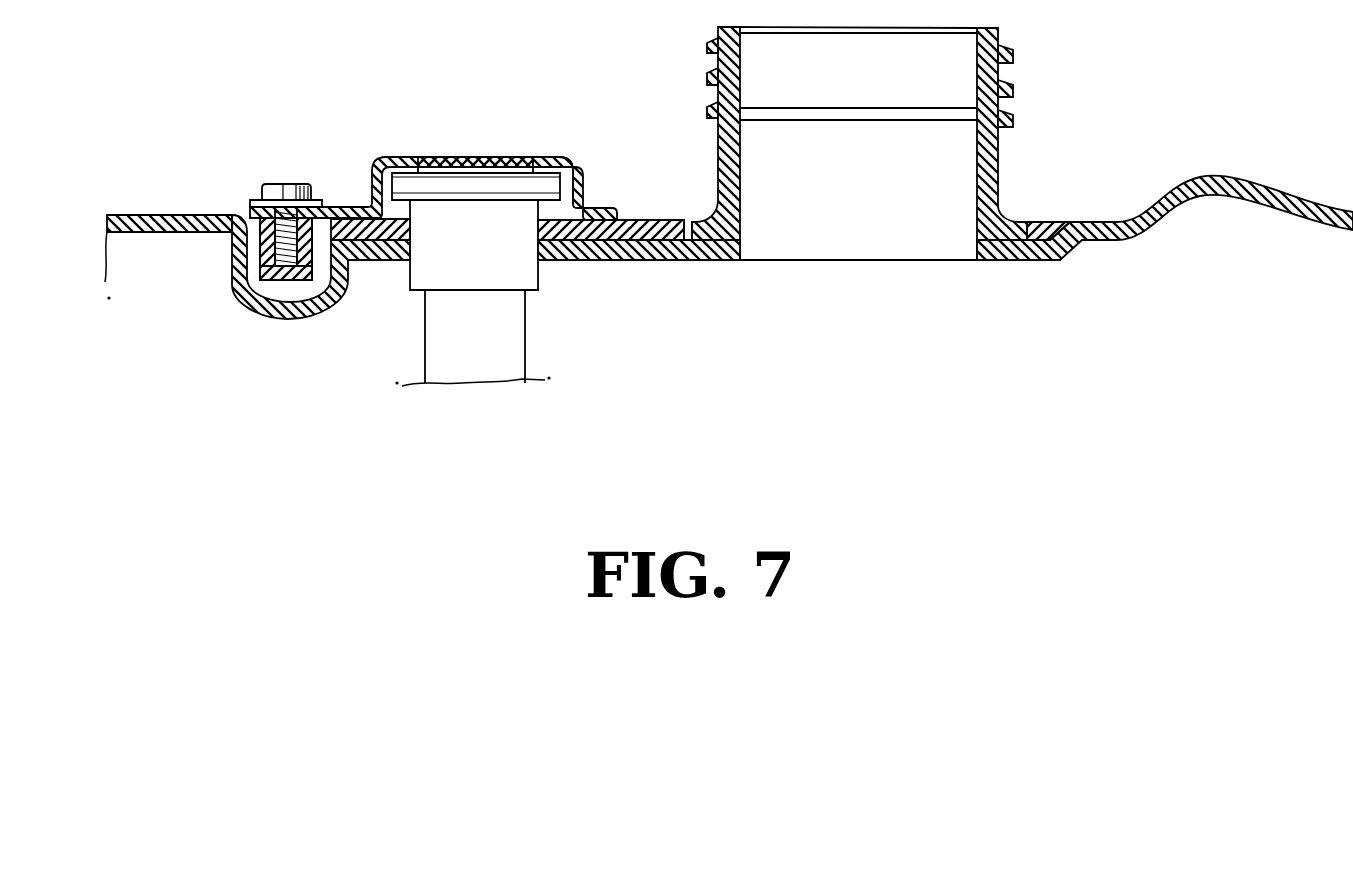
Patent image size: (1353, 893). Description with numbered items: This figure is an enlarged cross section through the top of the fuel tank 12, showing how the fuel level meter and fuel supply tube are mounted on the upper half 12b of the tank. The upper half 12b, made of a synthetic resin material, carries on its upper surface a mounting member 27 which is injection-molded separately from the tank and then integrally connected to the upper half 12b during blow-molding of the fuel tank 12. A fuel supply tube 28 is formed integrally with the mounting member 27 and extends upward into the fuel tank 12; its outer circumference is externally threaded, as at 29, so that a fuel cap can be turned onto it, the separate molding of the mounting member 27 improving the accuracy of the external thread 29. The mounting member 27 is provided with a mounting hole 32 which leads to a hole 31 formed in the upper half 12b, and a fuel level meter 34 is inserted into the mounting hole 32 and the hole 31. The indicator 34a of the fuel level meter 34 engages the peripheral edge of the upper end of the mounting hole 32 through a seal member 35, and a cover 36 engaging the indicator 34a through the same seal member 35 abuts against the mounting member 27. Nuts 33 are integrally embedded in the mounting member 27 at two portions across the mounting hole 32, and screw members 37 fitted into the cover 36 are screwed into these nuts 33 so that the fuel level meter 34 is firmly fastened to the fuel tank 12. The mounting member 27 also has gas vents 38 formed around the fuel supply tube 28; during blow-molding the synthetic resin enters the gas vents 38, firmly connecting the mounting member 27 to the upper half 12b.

The fuel tank 12 is at (720, 191).
The upper half 12b is at (175, 214).
The mounting member 27 is at (632, 220).
The fuel supply tube 28 is at (1000, 150).
The external thread 29 is at (1008, 60).
The hole 31 is at (524, 250).
The mounting hole 32 is at (530, 228).
The nut 33 is at (283, 274).
The fuel level meter 34 is at (493, 347).
The indicator 34a is at (443, 172).
The seal member 35 is at (564, 162).
The cover 36 is at (375, 162).
The screw member 37 is at (285, 183).
The gas vent 38 is at (690, 241).